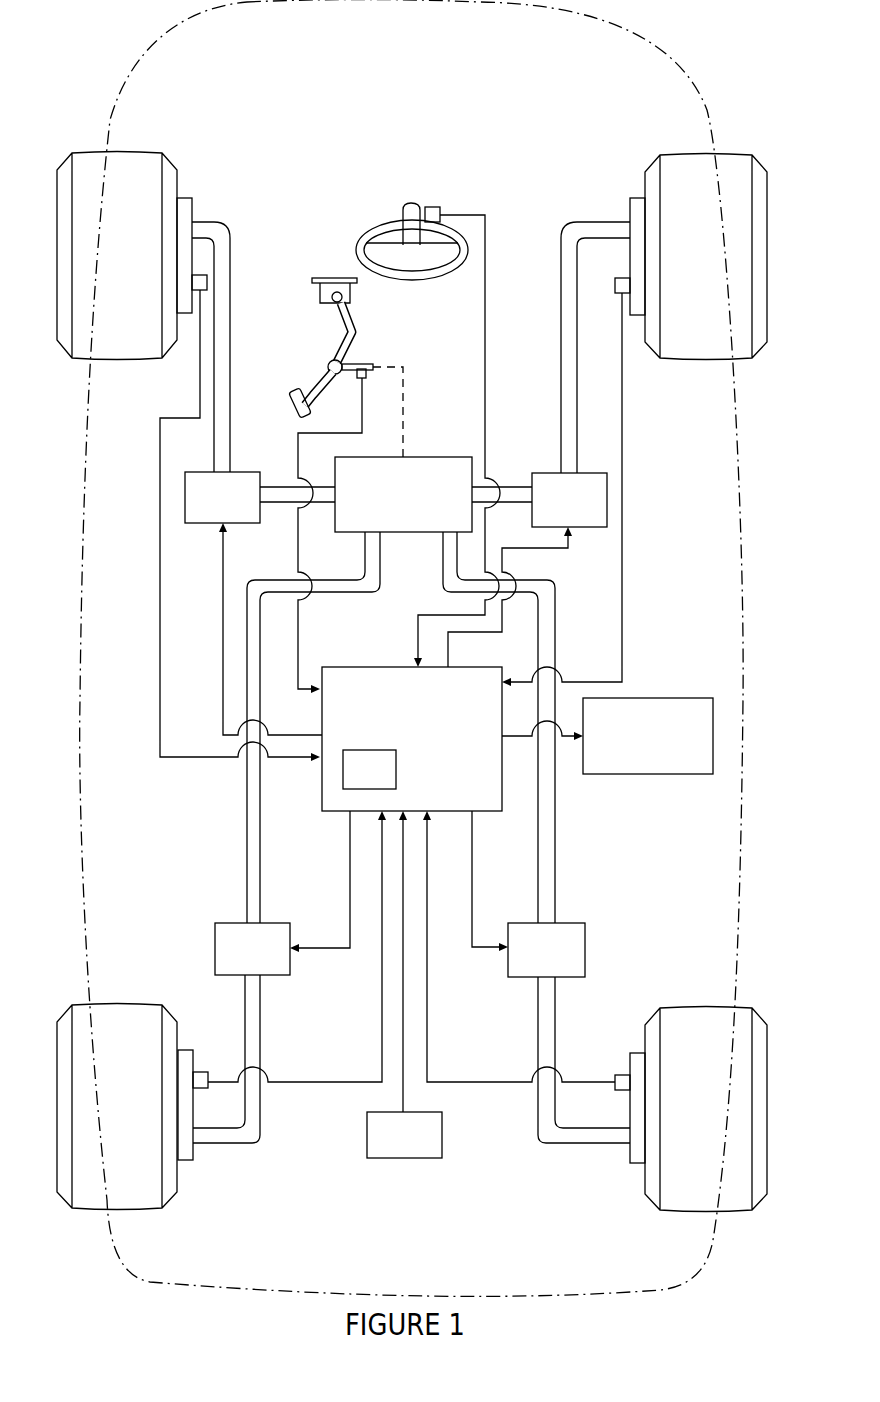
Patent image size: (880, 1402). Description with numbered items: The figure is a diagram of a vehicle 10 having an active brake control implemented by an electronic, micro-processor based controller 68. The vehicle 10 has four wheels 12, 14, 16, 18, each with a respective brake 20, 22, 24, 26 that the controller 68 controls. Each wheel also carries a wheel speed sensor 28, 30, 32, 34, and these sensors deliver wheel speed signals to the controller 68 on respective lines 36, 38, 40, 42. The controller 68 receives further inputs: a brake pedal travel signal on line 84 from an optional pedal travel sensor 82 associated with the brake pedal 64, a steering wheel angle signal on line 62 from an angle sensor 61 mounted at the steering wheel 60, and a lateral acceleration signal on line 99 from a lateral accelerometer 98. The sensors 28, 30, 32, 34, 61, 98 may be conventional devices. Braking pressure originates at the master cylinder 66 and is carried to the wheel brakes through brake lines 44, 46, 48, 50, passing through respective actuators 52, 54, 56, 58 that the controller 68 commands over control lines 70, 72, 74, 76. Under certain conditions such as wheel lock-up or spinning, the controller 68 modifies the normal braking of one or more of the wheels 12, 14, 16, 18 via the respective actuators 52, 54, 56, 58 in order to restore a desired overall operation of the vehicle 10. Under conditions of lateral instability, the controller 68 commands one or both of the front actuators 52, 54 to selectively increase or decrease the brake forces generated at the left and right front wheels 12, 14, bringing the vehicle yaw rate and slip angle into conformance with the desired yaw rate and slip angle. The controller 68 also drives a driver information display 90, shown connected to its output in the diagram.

The vehicle 10 is at (664, 33).
The wheel 12 is at (136, 160).
The wheel 14 is at (684, 163).
The wheel 16 is at (126, 1202).
The wheel 18 is at (700, 1200).
The brake 20 is at (186, 201).
The brake 22 is at (637, 206).
The brake 24 is at (185, 1158).
The brake 26 is at (637, 1163).
The wheel speed sensor 28 is at (201, 277).
The wheel speed sensor 30 is at (621, 282).
The wheel speed sensor 32 is at (201, 1073).
The wheel speed sensor 34 is at (621, 1077).
The line 36 is at (161, 445).
The line 38 is at (622, 447).
The line 40 is at (340, 1090).
The line 42 is at (448, 1082).
The front left brake line 44 is at (216, 228).
The front right brake line 46 is at (576, 228).
The rear left brake line 48 is at (256, 1012).
The rear right brake line 50 is at (547, 1037).
The actuator 52 is at (185, 494).
The actuator 54 is at (607, 494).
The actuator 56 is at (222, 938).
The actuator 58 is at (577, 940).
The steering wheel 60 is at (358, 253).
The angle sensor 61 is at (429, 205).
The line 62 is at (462, 213).
The brake pedal 64 is at (298, 415).
The master cylinder 66 is at (405, 458).
The controller 68 is at (488, 804).
The front left actuator control line 70 is at (220, 575).
The front right actuator control line 72 is at (547, 552).
The rear left actuator control line 74 is at (315, 948).
The rear right actuator control line 76 is at (487, 950).
The pedal travel sensor 82 is at (365, 380).
The line 84 is at (298, 668).
The driver information display 90 is at (652, 707).
The lateral accelerometer 98 is at (405, 1159).
The line 99 is at (398, 1083).